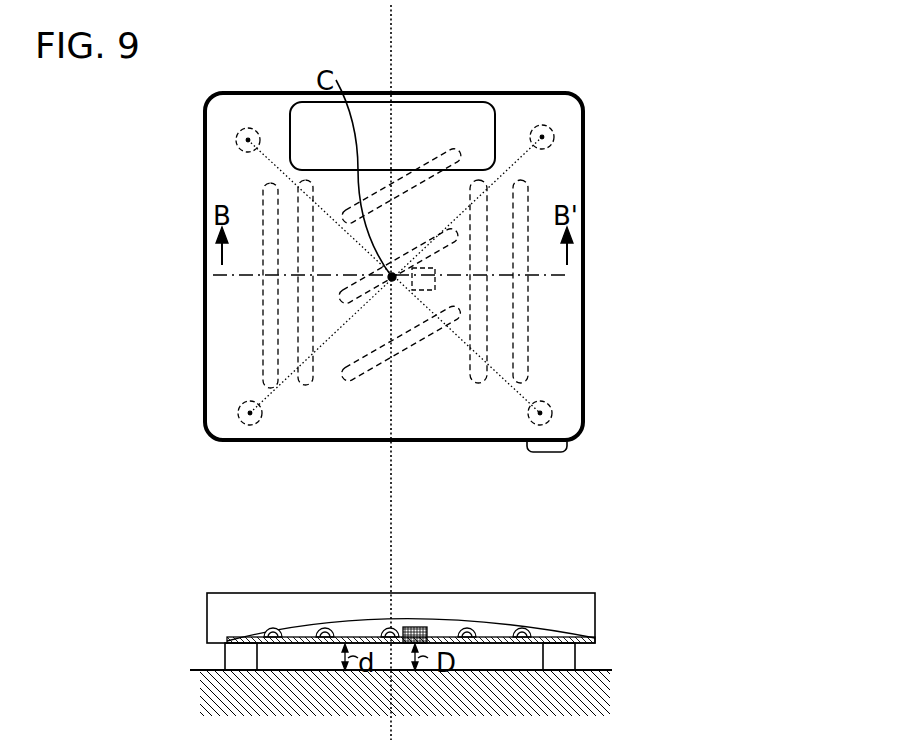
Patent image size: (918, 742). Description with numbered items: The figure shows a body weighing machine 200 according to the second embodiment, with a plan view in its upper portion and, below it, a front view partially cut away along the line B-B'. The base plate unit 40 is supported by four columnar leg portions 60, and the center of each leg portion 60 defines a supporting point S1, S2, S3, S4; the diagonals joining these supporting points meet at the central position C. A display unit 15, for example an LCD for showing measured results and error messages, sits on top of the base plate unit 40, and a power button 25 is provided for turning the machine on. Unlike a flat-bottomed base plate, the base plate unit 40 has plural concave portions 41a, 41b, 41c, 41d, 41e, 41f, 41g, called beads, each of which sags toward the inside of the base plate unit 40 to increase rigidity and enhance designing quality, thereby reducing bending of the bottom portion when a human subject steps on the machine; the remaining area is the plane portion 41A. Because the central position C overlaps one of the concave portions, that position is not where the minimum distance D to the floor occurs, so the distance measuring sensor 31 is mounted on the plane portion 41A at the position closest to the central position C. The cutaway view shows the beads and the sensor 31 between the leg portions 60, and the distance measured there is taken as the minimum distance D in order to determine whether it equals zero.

The body weighing machine 200 is at (786, 57).
The base plate unit 40 is at (584, 166).
The display unit 15 is at (458, 102).
The power button 25 is at (552, 452).
The distance measuring sensor 31 is at (427, 292).
The plane portion 41A is at (252, 638).
The concave portion 41a is at (262, 328).
The concave portion 41b is at (300, 295).
The concave portion 41c is at (398, 214).
The concave portion 41d is at (400, 262).
The concave portion 41e is at (377, 372).
The concave portion 41f is at (487, 297).
The concave portion 41g is at (527, 344).
The leg portion 60 is at (246, 128).
The supporting point S1 is at (245, 142).
The supporting point S2 is at (245, 420).
The supporting point S3 is at (553, 406).
The supporting point S4 is at (549, 134).